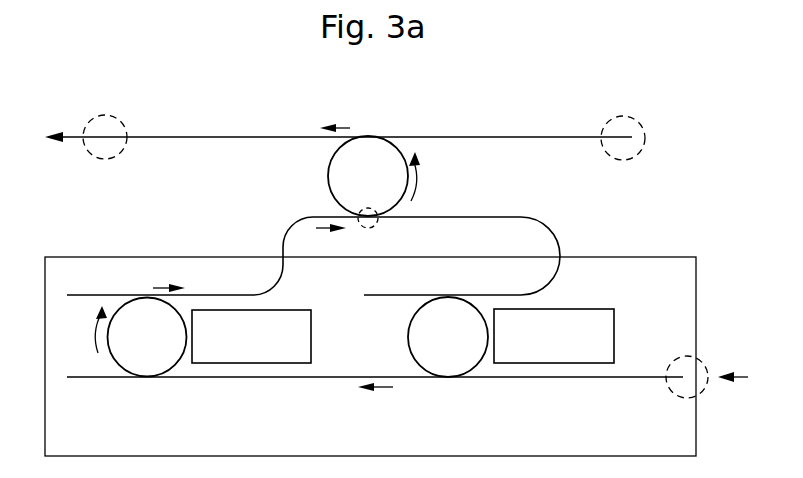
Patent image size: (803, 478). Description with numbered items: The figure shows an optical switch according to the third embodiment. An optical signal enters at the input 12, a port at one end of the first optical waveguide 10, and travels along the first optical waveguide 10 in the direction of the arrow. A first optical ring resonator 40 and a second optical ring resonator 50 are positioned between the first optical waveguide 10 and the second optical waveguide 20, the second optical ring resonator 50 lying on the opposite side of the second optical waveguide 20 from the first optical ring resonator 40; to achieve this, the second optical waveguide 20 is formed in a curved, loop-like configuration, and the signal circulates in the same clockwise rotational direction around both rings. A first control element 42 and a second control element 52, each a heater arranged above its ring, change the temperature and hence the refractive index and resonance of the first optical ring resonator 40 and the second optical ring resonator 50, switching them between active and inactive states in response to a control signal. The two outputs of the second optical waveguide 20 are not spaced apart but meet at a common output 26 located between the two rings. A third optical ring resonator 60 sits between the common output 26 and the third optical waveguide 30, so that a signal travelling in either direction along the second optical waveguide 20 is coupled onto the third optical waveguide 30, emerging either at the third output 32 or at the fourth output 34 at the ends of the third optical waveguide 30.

The first optical waveguide 10 is at (256, 378).
The input 12 is at (672, 392).
The second optical waveguide 20 is at (557, 233).
The common output 26 is at (360, 211).
The third optical waveguide 30 is at (435, 137).
The third output 32 is at (624, 117).
The fourth output 34 is at (106, 116).
The first optical ring resonator 40 is at (411, 361).
The first control element 42 is at (614, 330).
The second optical ring resonator 50 is at (112, 367).
The second control element 52 is at (311, 330).
The third optical ring resonator 60 is at (331, 158).